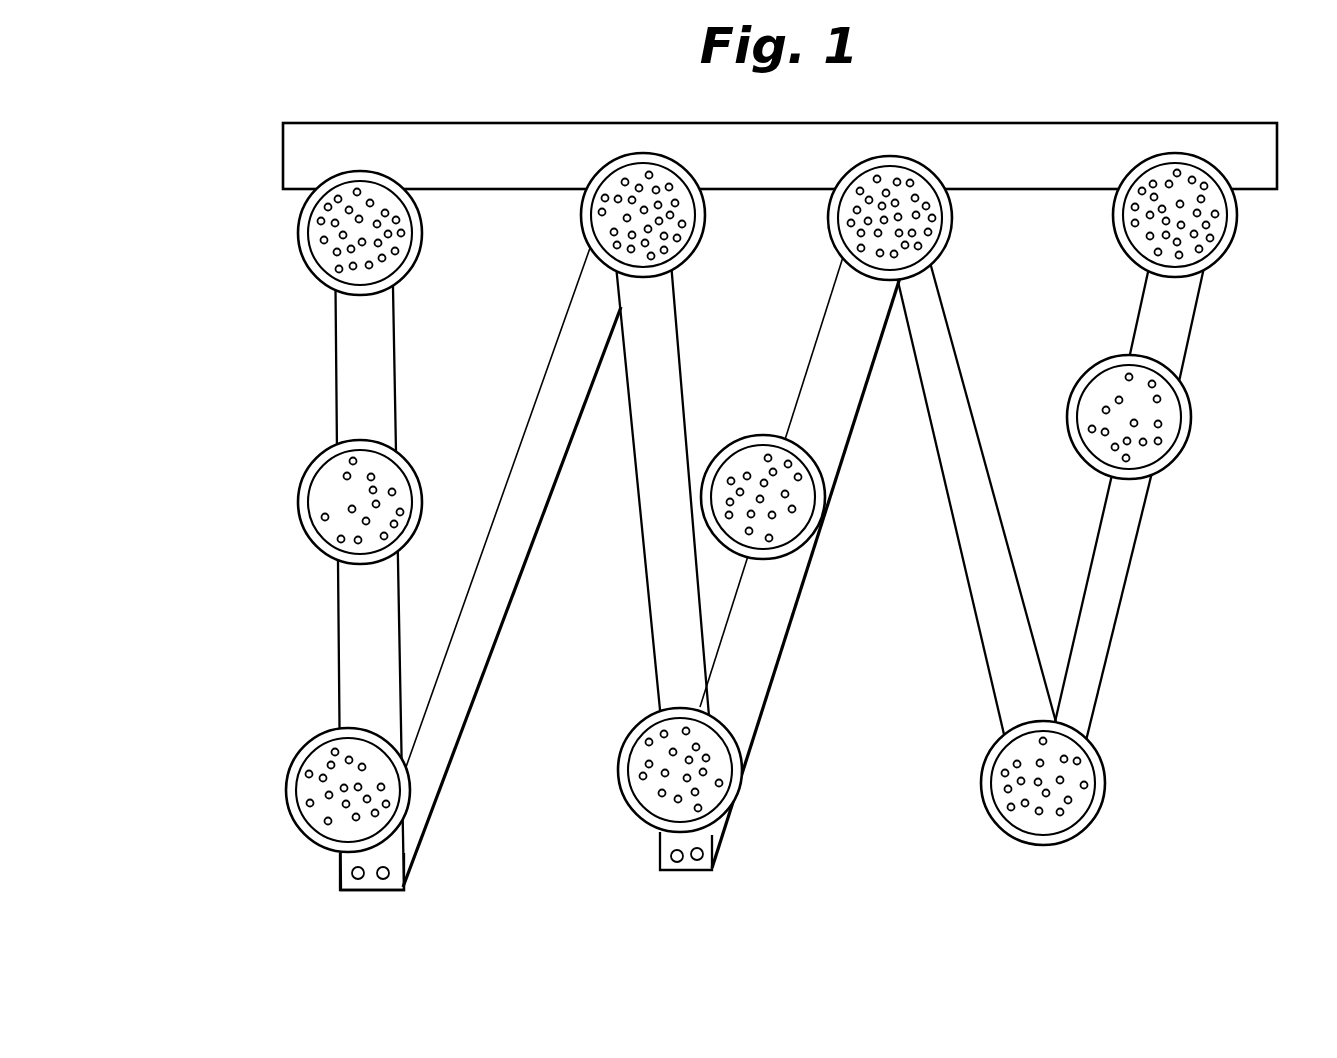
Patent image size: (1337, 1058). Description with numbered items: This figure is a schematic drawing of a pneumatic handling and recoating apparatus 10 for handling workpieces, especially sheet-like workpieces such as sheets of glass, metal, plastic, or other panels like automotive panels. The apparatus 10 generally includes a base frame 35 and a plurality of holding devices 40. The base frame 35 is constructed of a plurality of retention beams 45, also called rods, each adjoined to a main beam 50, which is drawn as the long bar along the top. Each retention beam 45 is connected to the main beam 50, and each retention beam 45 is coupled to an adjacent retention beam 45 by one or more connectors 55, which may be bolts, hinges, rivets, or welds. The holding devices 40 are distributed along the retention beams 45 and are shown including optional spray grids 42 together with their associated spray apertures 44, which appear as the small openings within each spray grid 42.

The pneumatic handling and recoating apparatus 10 is at (541, 98).
The base frame 35 is at (268, 669).
The holding device 40 is at (302, 225).
The spray grid 42 is at (400, 213).
The spray aperture 44 is at (315, 248).
The retention beam 45 is at (352, 628).
The main beam 50 is at (736, 145).
The connector 55 is at (697, 863).